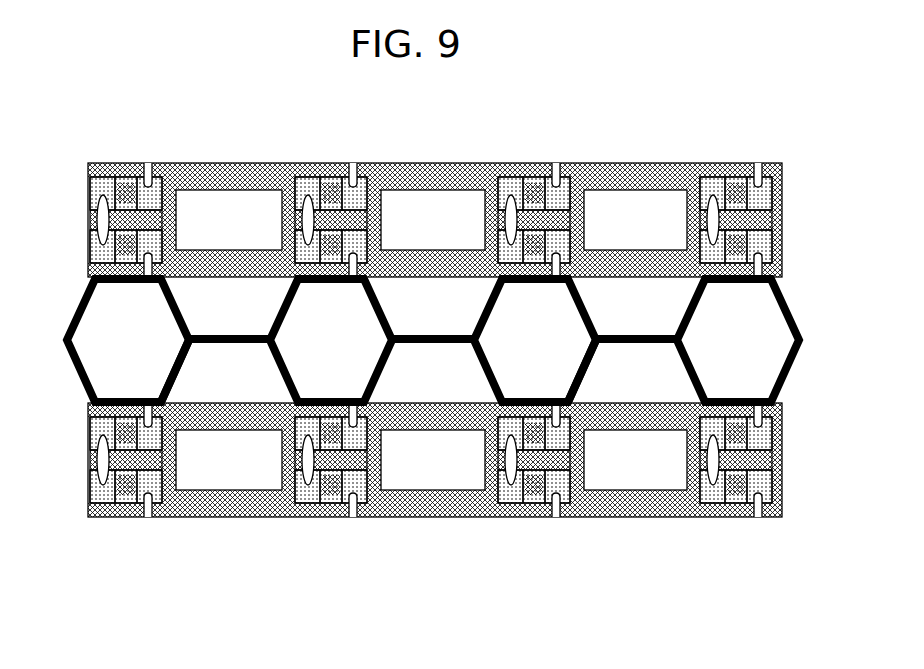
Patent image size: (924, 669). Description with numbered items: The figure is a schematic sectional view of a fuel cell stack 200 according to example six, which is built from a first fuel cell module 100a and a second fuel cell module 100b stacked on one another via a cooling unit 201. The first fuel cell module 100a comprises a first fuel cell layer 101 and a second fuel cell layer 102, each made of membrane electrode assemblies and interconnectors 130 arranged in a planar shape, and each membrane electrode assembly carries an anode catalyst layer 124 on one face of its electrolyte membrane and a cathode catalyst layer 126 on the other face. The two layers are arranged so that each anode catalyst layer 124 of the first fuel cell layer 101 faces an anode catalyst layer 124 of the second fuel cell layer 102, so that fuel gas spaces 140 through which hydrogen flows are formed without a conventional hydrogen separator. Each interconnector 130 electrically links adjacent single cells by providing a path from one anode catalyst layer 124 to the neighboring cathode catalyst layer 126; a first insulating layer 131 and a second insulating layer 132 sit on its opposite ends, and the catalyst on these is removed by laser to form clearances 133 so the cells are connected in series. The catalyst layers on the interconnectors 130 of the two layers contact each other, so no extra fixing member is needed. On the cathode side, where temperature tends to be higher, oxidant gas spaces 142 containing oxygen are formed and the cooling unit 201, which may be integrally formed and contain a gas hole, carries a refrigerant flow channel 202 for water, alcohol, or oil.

The first fuel cell module 100a is at (76, 163).
The second fuel cell module 100b is at (76, 403).
The first fuel cell layer 101 is at (788, 175).
The second fuel cell layer 102 is at (788, 225).
The anode catalyst layer 124 is at (197, 185).
The cathode catalyst layer 126 is at (233, 182).
The interconnector 130 is at (323, 178).
The first insulating layer 131 is at (301, 178).
The second insulating layer 132 is at (357, 178).
The clearance 133 is at (150, 178).
The fuel gas space 140 is at (233, 215).
The oxidant gas space 142 is at (196, 378).
The fuel cell stack 200 is at (425, 351).
The cooling unit 201 is at (415, 347).
The refrigerant flow channel 202 is at (142, 346).